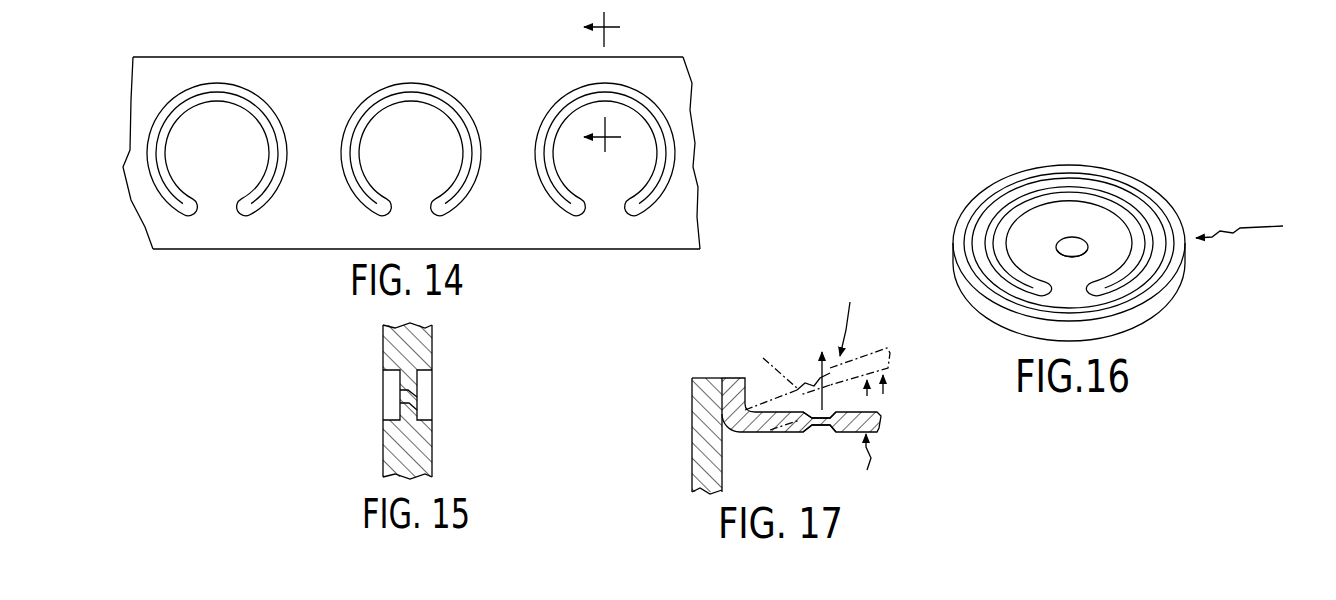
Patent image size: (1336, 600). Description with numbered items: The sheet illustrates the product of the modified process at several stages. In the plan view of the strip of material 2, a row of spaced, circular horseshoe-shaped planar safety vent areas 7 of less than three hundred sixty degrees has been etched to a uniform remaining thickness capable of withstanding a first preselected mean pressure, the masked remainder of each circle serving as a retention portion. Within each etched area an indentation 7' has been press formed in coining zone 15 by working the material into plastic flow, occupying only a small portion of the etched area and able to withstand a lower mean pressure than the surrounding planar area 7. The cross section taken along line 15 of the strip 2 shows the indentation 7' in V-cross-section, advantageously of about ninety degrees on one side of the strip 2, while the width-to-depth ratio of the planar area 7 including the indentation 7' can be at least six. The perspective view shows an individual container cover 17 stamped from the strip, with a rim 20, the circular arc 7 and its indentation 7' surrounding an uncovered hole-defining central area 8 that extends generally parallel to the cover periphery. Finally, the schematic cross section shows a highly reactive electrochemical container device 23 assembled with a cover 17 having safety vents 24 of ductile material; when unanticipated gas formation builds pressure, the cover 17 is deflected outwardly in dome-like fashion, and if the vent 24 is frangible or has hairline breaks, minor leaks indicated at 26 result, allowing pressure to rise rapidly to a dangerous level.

In FIG. 14, the strip of material 2 is at (411, 153).
In FIG. 15, the strip of material 2 is at (420, 350).
In FIG. 14, the planar safety vent area 7 is at (443, 149).
In FIG. 15, the planar safety vent area 7 is at (412, 392).
In FIG. 16, the planar safety vent area 7 is at (1113, 240).
In FIG. 14, the indentation 7' is at (450, 149).
In FIG. 15, the indentation 7' is at (380, 412).
In FIG. 16, the indentation 7' is at (1117, 240).
In FIG. 16, the central area 8 is at (1073, 237).
In FIG. 14, the coining zone 15 is at (610, 85).
In FIG. 16, the container cover 17 is at (1252, 226).
In FIG. 17, the container cover 17 is at (862, 386).
In FIG. 16, the rim 20 is at (1157, 198).
In FIG. 17, the electrochemical container device 23 is at (692, 440).
In FIG. 17, the safety vent 24 is at (763, 358).
In FIG. 17, the minor leak 26 is at (818, 385).